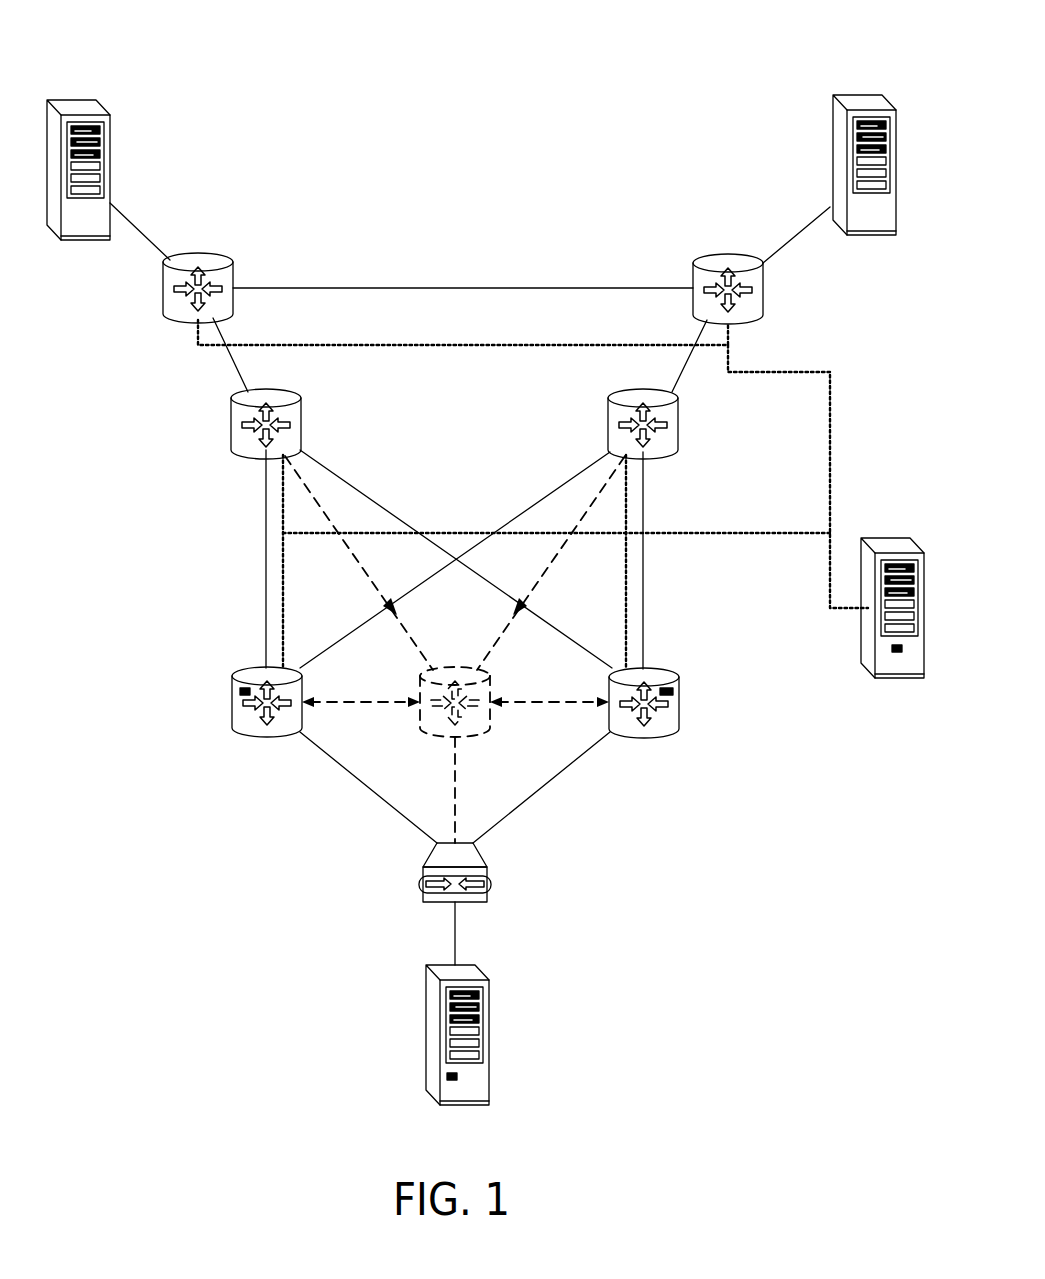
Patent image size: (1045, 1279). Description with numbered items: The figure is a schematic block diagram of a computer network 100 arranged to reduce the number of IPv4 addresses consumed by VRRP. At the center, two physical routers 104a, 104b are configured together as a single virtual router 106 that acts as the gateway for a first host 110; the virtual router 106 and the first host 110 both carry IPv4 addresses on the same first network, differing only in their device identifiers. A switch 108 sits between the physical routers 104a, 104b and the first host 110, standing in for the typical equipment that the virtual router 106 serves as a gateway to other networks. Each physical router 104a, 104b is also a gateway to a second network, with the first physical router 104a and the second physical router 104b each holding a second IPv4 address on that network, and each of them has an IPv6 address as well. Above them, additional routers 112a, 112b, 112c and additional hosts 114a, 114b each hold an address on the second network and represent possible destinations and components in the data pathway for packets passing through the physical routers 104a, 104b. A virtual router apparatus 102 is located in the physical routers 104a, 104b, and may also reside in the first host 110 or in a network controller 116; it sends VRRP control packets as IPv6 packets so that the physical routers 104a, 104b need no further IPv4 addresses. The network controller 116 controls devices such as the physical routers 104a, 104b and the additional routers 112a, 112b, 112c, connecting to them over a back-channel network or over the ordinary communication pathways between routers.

The computer network 100 is at (130, 63).
The virtual router apparatus 102 is at (240, 691).
The first physical router 104a is at (215, 729).
The second physical router 104b is at (687, 728).
The virtual router 106 is at (456, 675).
The switch 108 is at (490, 875).
The first host 110 is at (550, 1035).
The additional router 112a is at (258, 437).
The additional router 112b is at (750, 343).
The additional router 112c is at (137, 268).
The additional host 114a is at (161, 199).
The additional host 114b is at (787, 193).
The network controller 116 is at (901, 650).